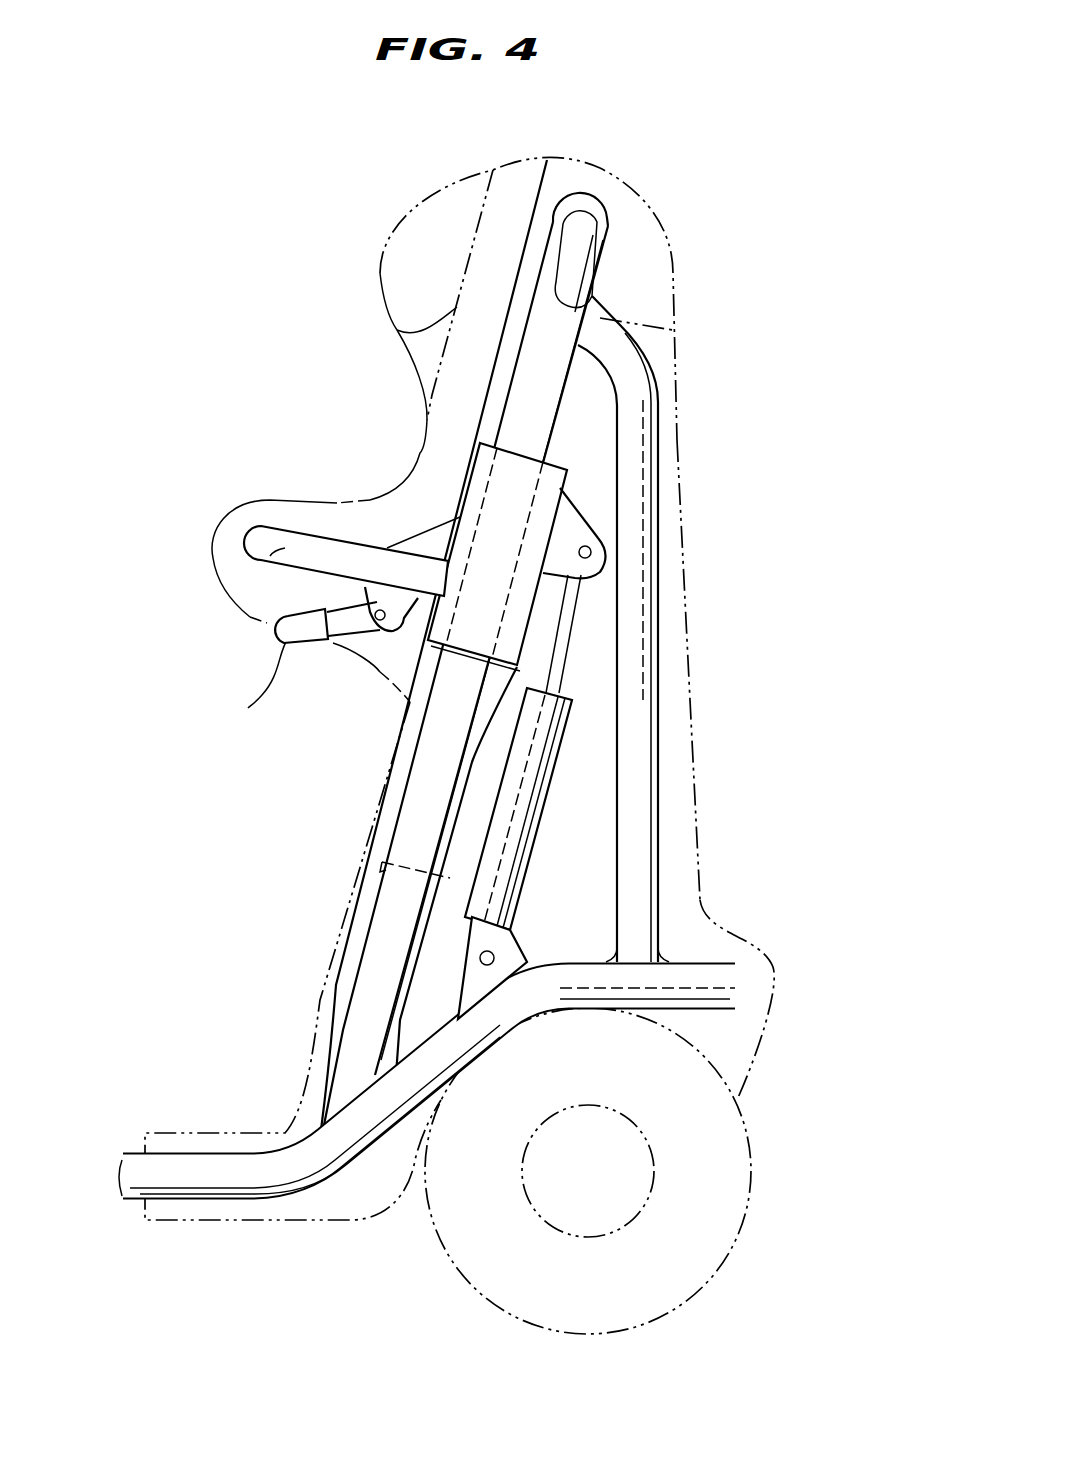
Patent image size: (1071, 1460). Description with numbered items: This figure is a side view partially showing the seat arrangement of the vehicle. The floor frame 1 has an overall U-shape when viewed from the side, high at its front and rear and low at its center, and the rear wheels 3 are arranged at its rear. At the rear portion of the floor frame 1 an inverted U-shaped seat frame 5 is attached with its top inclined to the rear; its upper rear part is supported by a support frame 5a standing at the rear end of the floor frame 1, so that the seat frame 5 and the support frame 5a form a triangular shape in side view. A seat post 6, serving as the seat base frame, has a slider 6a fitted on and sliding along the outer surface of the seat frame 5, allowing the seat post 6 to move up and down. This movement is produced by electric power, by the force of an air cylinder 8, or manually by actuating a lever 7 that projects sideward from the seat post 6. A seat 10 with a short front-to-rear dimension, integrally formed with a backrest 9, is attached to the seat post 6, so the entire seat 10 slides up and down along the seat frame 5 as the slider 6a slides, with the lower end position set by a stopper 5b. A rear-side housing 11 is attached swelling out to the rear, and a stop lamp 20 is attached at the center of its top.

The floor frame 1 is at (193, 1170).
The rear wheels 3 is at (710, 1222).
The seat frame 5 is at (420, 800).
The support frame 5a is at (655, 617).
The stopper 5b is at (385, 865).
The seat post 6 is at (278, 553).
The slider 6a is at (547, 503).
The lever 7 is at (290, 638).
The air cylinder 8 is at (480, 905).
The backrest 9 is at (428, 320).
The seat 10 is at (248, 516).
The rear-side housing 11 is at (678, 745).
The stop lamp 20 is at (655, 295).